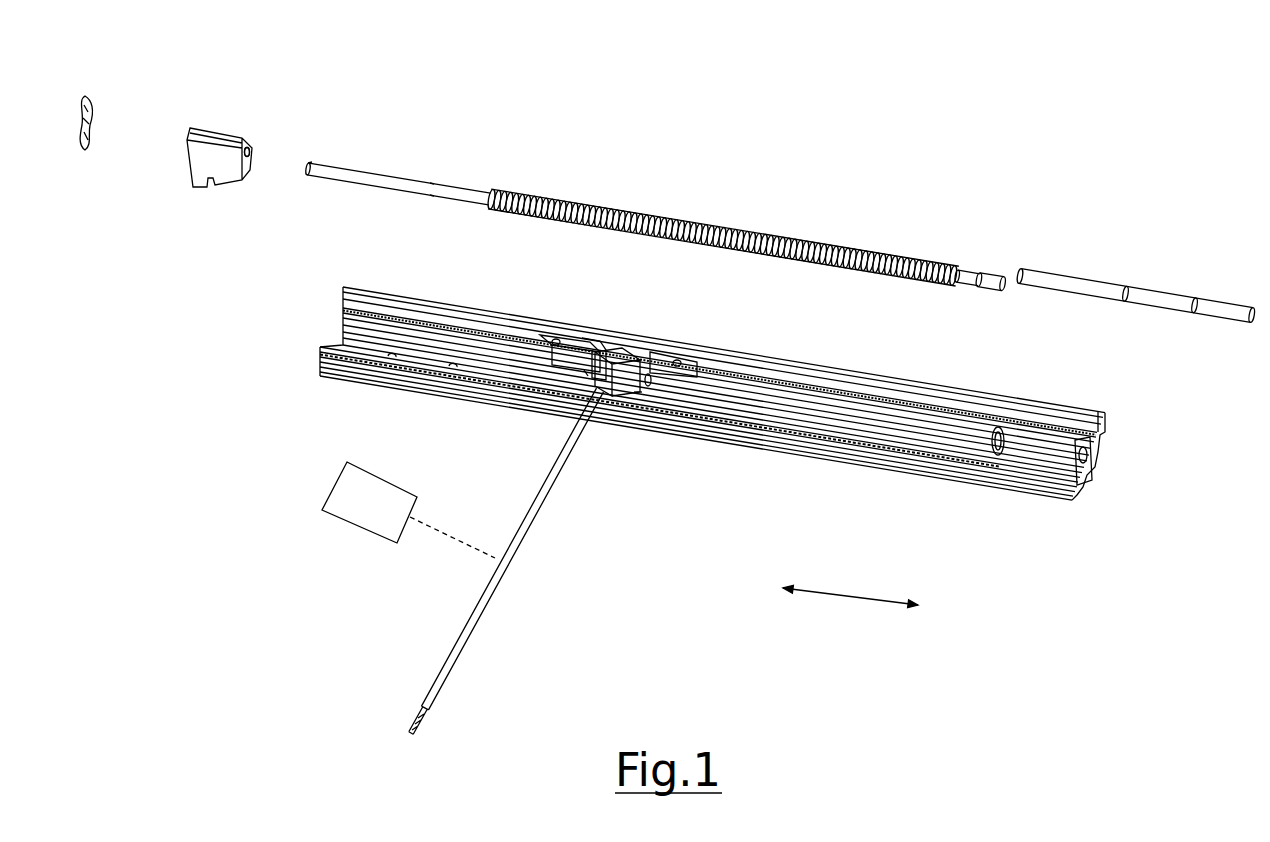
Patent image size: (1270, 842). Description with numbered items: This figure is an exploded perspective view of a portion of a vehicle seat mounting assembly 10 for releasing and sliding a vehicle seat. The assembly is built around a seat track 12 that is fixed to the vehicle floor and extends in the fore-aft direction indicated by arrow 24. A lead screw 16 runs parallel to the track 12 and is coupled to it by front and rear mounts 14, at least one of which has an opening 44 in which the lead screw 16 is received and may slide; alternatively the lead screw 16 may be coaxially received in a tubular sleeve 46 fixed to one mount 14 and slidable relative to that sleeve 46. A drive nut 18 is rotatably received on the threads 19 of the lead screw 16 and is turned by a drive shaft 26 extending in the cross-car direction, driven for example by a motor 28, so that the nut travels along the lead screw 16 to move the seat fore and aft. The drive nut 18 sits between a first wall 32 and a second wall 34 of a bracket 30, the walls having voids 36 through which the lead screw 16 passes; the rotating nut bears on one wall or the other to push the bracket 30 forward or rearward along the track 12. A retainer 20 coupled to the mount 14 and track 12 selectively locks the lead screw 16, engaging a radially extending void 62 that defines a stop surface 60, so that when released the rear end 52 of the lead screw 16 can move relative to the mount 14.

The vehicle seat mounting assembly 10 is at (990, 62).
The seat track 12 is at (1022, 486).
The mount 14 is at (246, 110).
The lead screw 16 is at (982, 238).
The drive nut 18 is at (636, 368).
The threads 19 is at (708, 222).
The retainer 20 is at (118, 85).
The arrow 24 is at (855, 598).
The drive shaft 26 is at (517, 615).
The motor 28 is at (365, 520).
The bracket 30 is at (580, 340).
The first wall 32 is at (638, 392).
The second wall 34 is at (585, 373).
The voids 36 is at (650, 388).
The opening 44 is at (249, 152).
The tubular sleeve 46 is at (1145, 260).
The rear end 52 is at (302, 167).
The stop surface 60 is at (433, 186).
The void 62 is at (431, 206).